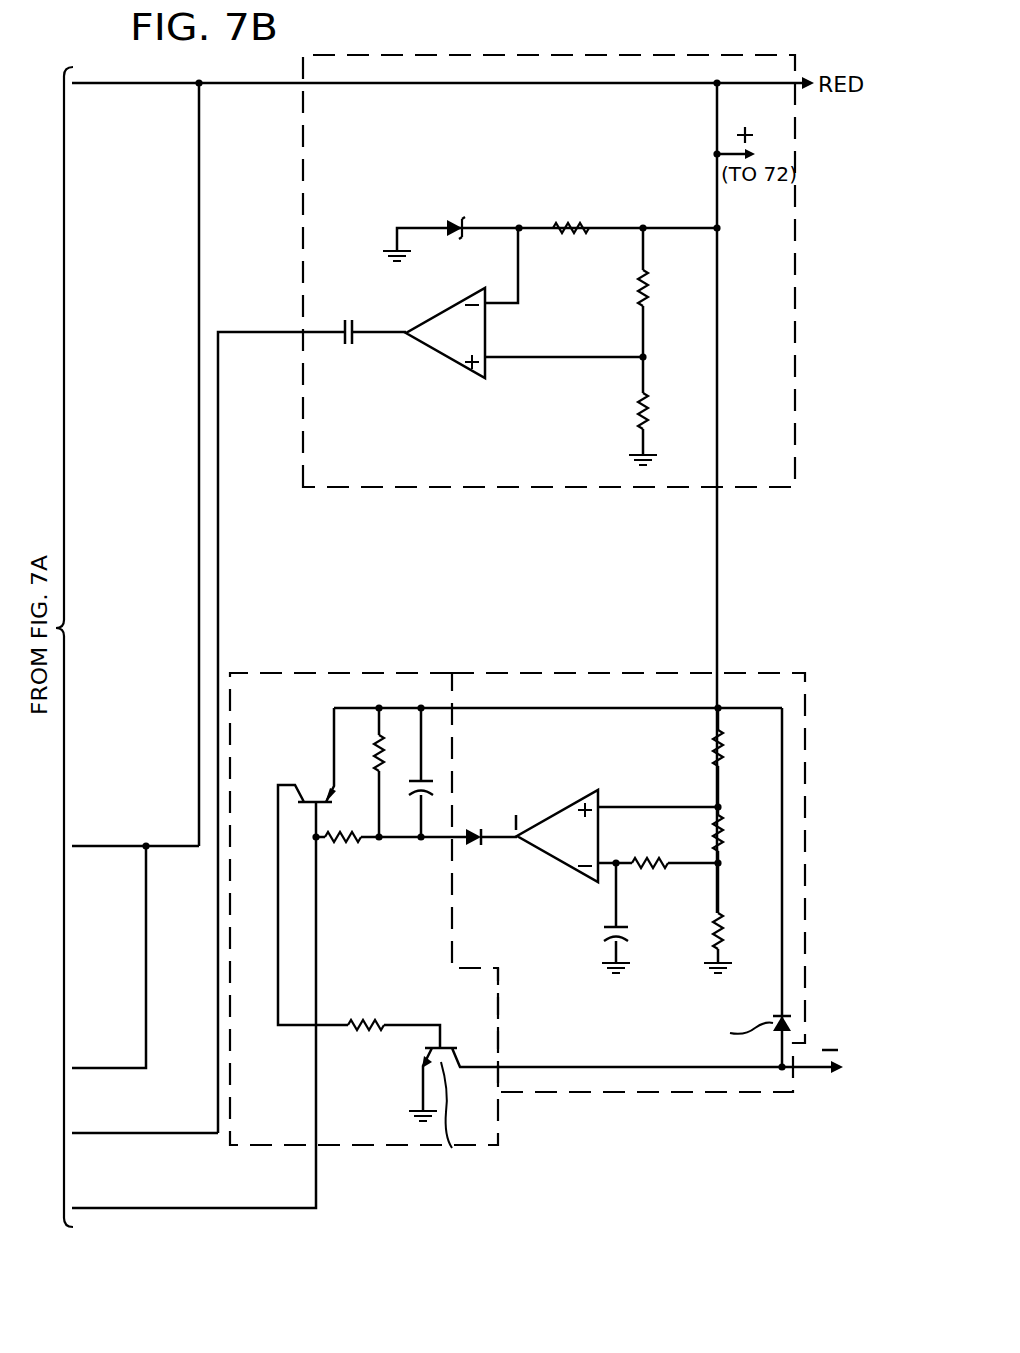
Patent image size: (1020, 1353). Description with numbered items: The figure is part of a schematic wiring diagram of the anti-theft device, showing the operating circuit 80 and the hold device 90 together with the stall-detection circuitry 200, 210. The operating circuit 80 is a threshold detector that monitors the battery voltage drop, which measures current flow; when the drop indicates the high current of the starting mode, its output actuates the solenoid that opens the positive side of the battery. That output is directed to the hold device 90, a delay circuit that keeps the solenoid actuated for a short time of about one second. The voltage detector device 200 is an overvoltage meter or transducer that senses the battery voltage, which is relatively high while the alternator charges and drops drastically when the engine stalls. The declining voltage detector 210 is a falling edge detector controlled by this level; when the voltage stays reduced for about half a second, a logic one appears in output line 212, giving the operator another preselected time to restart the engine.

The operating circuit 80 is at (618, 673).
The hold device 90 is at (318, 673).
The voltage detector device 200 is at (506, 594).
The detector 210 is at (485, 487).
The output line 212 is at (144, 1133).